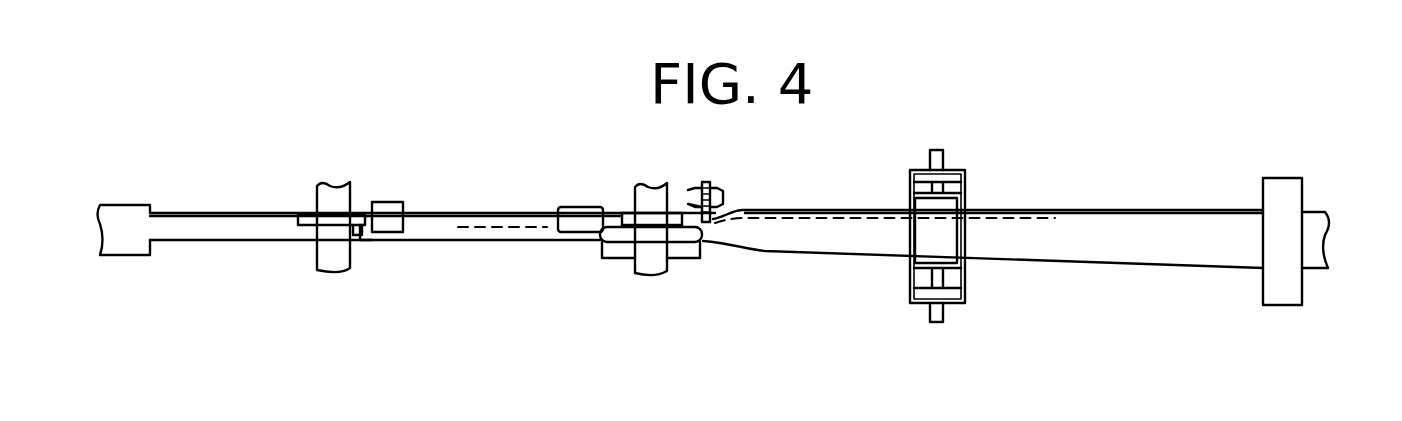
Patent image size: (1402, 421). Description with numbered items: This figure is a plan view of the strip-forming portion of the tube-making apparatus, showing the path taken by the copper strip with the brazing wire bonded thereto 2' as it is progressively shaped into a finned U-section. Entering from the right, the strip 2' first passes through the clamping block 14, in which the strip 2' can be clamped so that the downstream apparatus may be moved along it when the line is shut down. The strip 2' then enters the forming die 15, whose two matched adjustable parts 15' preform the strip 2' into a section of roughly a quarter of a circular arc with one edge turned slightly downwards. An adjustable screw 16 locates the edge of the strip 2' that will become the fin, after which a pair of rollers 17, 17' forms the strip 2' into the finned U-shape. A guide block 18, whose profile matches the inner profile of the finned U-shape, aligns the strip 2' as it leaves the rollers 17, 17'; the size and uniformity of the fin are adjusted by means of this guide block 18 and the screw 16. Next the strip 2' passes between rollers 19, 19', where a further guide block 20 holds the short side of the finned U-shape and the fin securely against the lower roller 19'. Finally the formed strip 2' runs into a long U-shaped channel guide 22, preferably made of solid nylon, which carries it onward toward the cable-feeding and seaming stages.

The copper strip with brazing wire bonded thereto 2' is at (1016, 204).
The clamping block 14 is at (1280, 192).
The forming die 15 is at (984, 218).
The forming die part 15' is at (943, 216).
The adjustable screw 16 is at (708, 186).
The roller 17 is at (672, 195).
The roller 17' is at (632, 273).
The guide block 18 is at (578, 215).
The roller 19 is at (404, 187).
The lower roller 19' is at (331, 225).
The guide block 20 is at (392, 210).
The U-shaped channel guide 22 is at (142, 208).